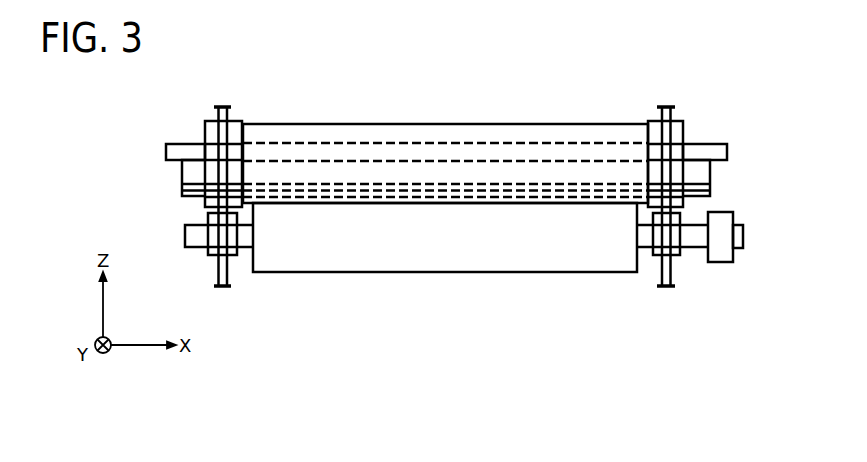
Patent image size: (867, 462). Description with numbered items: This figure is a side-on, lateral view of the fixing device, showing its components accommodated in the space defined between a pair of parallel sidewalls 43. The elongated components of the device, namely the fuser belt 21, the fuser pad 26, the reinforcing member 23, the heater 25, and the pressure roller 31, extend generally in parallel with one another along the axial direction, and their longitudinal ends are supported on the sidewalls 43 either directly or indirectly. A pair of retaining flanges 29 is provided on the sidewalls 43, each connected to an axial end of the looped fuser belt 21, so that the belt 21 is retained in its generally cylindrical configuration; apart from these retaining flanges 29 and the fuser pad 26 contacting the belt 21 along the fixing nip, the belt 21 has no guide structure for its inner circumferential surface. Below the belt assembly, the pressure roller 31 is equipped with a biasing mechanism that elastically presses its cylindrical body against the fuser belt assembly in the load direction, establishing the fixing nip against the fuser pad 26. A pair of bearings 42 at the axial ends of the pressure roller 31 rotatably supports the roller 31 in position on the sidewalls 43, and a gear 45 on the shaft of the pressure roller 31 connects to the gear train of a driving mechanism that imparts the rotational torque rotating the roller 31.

The fuser belt 21 is at (447, 123).
The reinforcing member 23 is at (712, 172).
The heater 25 is at (703, 143).
The fuser pad 26 is at (712, 192).
The retaining flanges 29 is at (208, 120).
The pressure roller 31 is at (443, 265).
The bearings 42 is at (208, 253).
The sidewalls 43 is at (218, 281).
The gear 45 is at (733, 256).